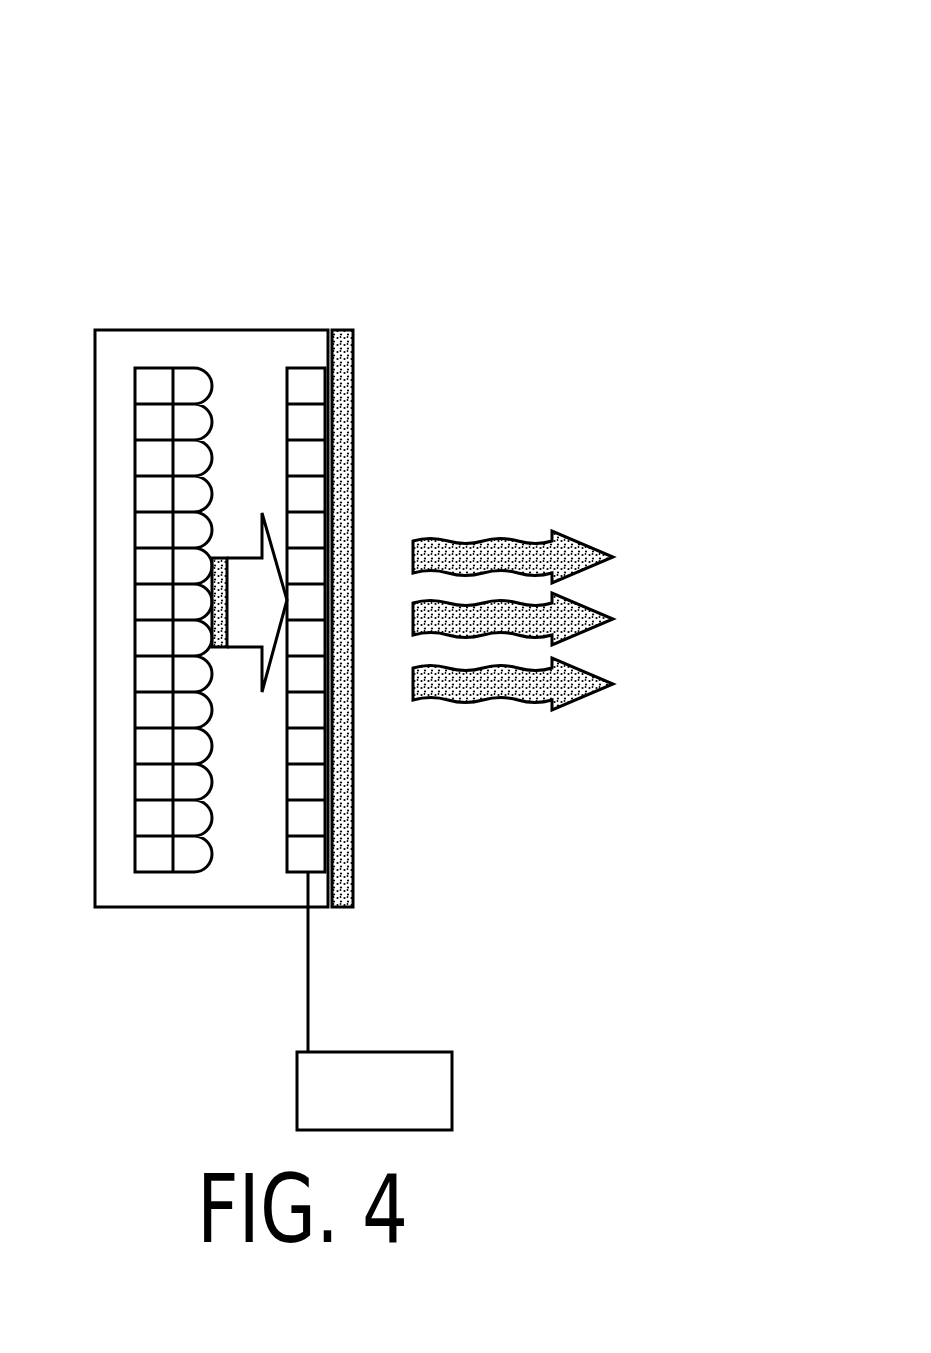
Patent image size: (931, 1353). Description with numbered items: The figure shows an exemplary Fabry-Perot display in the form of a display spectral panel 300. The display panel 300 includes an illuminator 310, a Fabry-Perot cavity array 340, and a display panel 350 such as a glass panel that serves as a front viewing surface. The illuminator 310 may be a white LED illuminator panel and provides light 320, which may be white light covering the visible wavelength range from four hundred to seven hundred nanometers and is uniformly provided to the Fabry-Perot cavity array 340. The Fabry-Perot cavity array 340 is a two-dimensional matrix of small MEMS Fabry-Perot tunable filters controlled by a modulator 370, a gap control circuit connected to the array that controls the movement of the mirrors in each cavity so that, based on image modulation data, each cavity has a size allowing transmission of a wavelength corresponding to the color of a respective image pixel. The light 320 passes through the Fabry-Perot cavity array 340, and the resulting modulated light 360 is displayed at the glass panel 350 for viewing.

The display spectral panel 300 is at (126, 133).
The illuminator 310 is at (150, 890).
The light 320 is at (223, 648).
The Fabry-Perot cavity array 340 is at (285, 385).
The display panel 350 is at (378, 385).
The modulated light 360 is at (468, 700).
The modulator 370 is at (452, 1087).